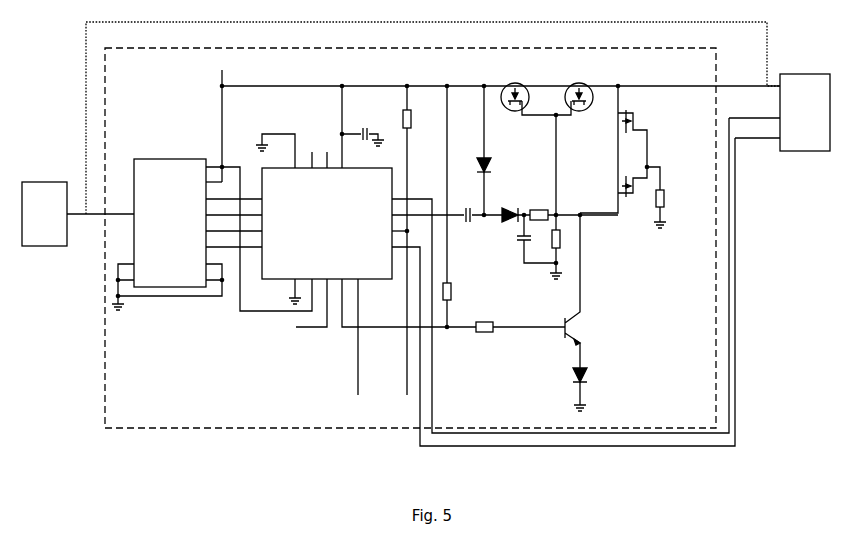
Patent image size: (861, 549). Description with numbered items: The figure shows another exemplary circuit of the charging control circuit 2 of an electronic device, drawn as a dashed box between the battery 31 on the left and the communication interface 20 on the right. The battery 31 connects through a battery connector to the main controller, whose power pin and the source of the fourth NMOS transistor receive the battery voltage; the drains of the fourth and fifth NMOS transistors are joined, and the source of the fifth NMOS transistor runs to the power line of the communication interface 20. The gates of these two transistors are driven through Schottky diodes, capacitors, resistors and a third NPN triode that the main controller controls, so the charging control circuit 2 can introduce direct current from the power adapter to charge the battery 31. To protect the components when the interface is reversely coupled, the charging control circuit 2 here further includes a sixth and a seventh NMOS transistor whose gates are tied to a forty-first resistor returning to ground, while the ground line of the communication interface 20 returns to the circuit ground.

The battery 31 is at (32, 182).
The charging control circuit 2 is at (716, 64).
The communication interface 20 is at (818, 74).